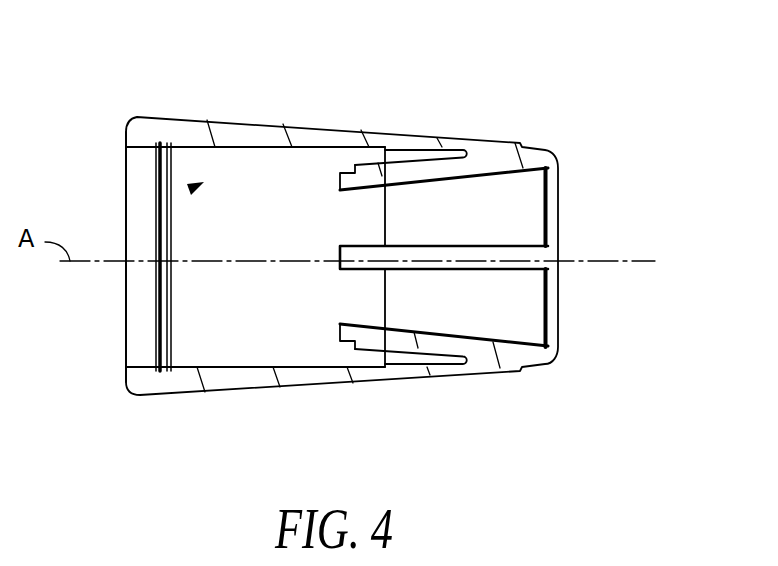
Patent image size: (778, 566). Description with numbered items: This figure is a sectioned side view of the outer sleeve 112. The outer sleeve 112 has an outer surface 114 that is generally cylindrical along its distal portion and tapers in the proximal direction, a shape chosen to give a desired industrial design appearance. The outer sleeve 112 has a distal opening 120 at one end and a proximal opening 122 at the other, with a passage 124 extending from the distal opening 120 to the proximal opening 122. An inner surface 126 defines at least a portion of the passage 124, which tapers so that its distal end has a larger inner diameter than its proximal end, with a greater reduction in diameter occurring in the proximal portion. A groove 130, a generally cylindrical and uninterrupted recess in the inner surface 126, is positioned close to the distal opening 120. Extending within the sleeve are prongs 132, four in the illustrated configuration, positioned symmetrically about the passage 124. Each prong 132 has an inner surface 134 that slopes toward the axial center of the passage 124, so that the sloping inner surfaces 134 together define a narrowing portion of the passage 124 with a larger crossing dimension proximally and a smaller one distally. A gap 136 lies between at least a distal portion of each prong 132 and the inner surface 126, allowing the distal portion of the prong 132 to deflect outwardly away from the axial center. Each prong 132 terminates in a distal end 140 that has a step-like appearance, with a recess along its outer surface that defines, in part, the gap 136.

The outer sleeve 112 is at (647, 113).
The outer surface 114 is at (223, 117).
The distal opening 120 is at (127, 368).
The proximal opening 122 is at (553, 171).
The passage 124 is at (198, 185).
The inner surface 126 is at (217, 340).
The groove 130 is at (157, 313).
The prong 132 is at (378, 186).
The inner surface 134 is at (480, 176).
The gap 136 is at (413, 153).
The distal end 140 is at (340, 183).